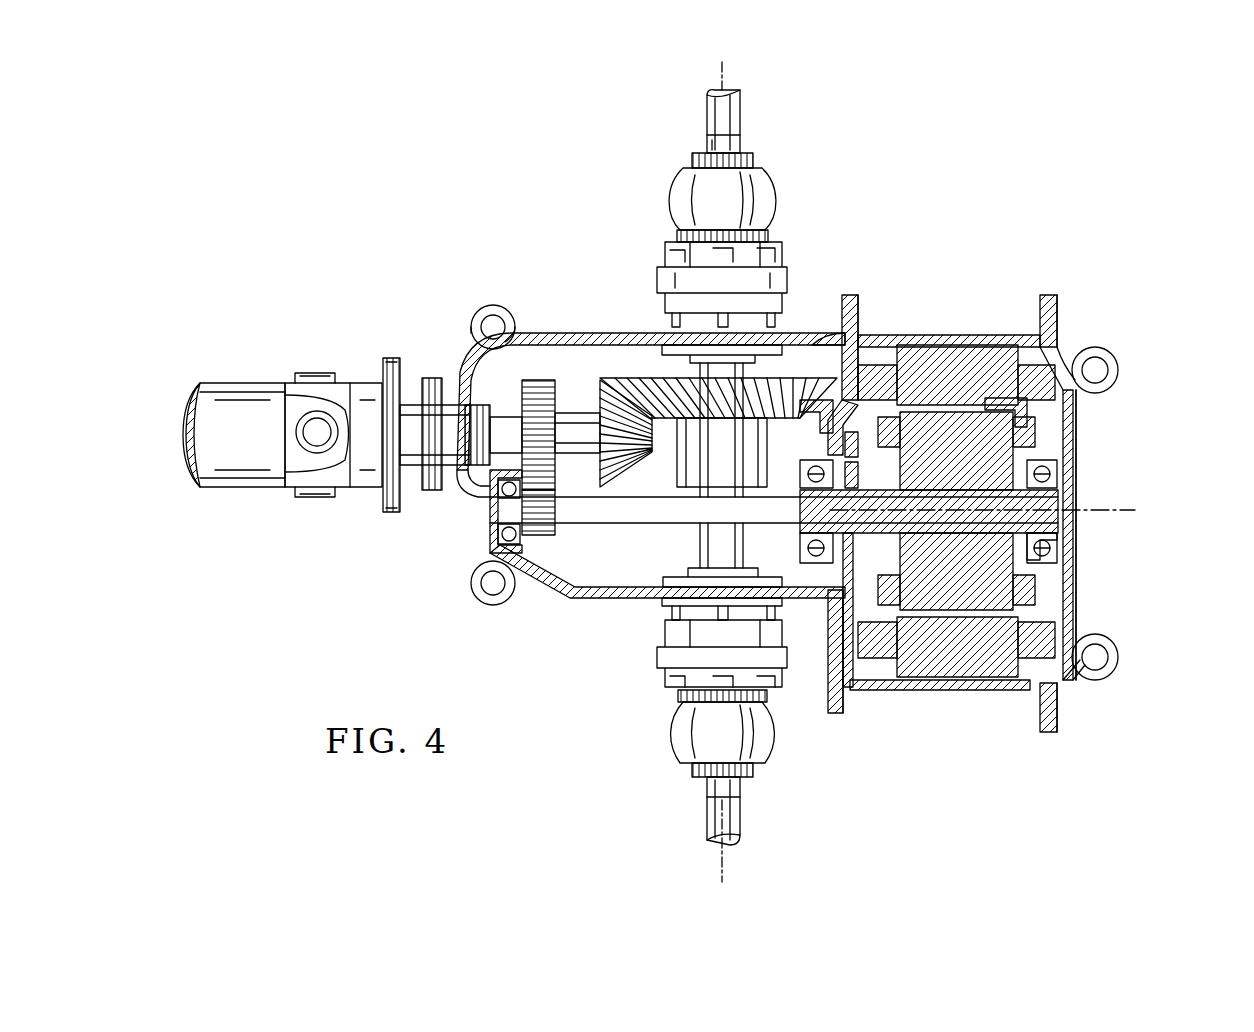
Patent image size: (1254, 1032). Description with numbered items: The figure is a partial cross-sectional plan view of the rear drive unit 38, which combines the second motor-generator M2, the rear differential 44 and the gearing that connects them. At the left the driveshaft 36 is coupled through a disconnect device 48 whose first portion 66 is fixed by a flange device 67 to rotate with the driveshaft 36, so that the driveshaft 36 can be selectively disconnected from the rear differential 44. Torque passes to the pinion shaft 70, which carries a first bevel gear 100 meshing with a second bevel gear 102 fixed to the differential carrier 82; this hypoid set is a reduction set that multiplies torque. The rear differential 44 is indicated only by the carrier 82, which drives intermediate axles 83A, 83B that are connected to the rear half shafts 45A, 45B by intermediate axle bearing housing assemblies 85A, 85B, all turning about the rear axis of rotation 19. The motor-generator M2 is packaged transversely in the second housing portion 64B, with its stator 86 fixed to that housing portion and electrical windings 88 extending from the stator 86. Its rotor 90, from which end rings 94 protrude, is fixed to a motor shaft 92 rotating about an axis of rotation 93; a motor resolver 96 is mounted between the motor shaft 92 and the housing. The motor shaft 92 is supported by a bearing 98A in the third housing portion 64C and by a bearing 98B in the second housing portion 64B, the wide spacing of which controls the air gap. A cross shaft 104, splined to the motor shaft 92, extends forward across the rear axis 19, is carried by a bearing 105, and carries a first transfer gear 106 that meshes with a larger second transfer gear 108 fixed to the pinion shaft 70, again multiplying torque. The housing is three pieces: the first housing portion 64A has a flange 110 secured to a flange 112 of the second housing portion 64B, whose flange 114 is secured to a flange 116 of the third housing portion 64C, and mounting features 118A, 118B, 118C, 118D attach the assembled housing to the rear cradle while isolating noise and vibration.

The rear axis of rotation 19 is at (722, 65).
The driveshaft 36 is at (288, 516).
The rear drive unit 38 is at (980, 190).
The rear differential 44 is at (668, 476).
The rear half shaft 45A is at (740, 140).
The rear half shaft 45B is at (707, 822).
The disconnect device 48 is at (462, 478).
The first housing portion 64A is at (583, 333).
The second housing portion 64B is at (960, 333).
The third housing portion 64C is at (1076, 440).
The first portion 66 is at (432, 395).
The flange device 67 is at (392, 490).
The pinion shaft 70 is at (505, 425).
The differential carrier 82 is at (695, 490).
The intermediate axle 83A is at (750, 318).
The intermediate axle 83B is at (700, 600).
The intermediate axle bearing housing assembly 85A is at (780, 255).
The intermediate axle bearing housing assembly 85B is at (675, 688).
The stator 86 is at (956, 511).
The electrical windings 88 is at (878, 360).
The rotor 90 is at (956, 511).
The motor shaft 92 is at (1060, 540).
The axis of rotation 93 is at (1112, 508).
The end rings 94 is at (1038, 433).
The motor resolver 96 is at (865, 478).
The bearing 98A is at (1050, 480).
The bearing 98B is at (816, 565).
The first bevel gear 100 is at (600, 398).
The second bevel gear 102 is at (655, 376).
The cross shaft 104 is at (610, 526).
The bearing 105 is at (500, 534).
The first transfer gear 106 is at (517, 552).
The second transfer gear 108 is at (538, 380).
The flange 110 is at (845, 300).
The flange 112 is at (862, 300).
The flange 114 is at (1045, 300).
The flange 116 is at (1065, 300).
The mounting feature 118A is at (487, 310).
The mounting feature 118B is at (478, 598).
The mounting feature 118C is at (1120, 372).
The mounting feature 118D is at (1120, 655).
The second motor-generator M2 is at (1036, 353).